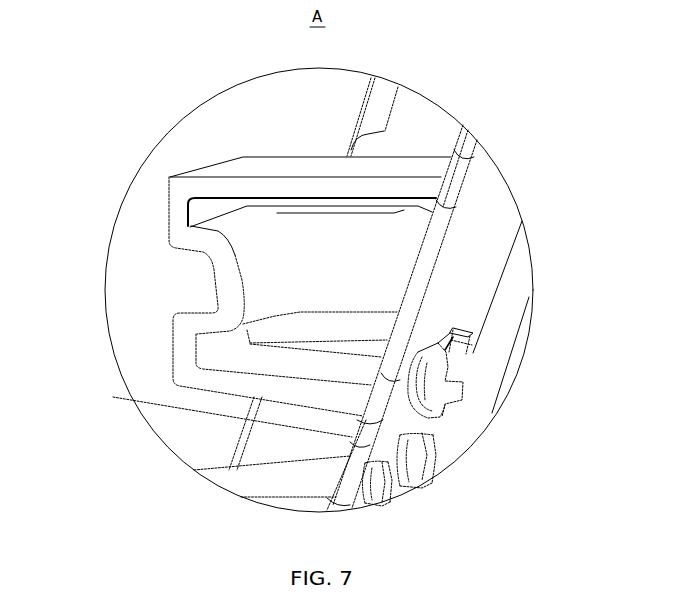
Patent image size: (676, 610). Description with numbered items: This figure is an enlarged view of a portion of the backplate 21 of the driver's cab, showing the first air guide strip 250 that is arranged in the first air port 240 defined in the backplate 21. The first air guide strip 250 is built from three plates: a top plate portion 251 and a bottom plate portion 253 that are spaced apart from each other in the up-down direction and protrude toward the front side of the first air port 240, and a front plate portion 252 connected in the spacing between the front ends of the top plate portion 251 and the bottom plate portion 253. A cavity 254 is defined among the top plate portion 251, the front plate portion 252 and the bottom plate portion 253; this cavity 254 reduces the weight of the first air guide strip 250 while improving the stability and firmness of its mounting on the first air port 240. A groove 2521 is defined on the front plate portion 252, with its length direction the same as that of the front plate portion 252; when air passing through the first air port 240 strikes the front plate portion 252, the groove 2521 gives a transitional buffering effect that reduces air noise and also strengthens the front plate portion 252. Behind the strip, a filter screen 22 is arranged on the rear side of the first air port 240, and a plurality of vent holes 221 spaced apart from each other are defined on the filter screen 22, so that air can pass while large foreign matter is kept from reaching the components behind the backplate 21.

The backplate 21 is at (376, 113).
The filter screen 22 is at (447, 337).
The vent holes 221 is at (402, 458).
The first air port 240 is at (352, 443).
The first air guide strip 250 is at (378, 187).
The top plate portion 251 is at (325, 168).
The front plate portion 252 is at (228, 283).
The groove 2521 is at (204, 283).
The bottom plate portion 253 is at (297, 395).
The cavity 254 is at (328, 283).